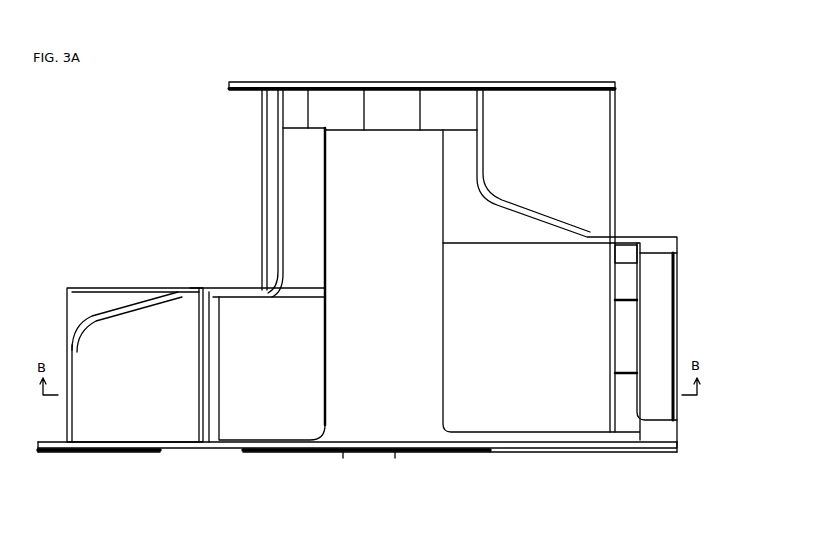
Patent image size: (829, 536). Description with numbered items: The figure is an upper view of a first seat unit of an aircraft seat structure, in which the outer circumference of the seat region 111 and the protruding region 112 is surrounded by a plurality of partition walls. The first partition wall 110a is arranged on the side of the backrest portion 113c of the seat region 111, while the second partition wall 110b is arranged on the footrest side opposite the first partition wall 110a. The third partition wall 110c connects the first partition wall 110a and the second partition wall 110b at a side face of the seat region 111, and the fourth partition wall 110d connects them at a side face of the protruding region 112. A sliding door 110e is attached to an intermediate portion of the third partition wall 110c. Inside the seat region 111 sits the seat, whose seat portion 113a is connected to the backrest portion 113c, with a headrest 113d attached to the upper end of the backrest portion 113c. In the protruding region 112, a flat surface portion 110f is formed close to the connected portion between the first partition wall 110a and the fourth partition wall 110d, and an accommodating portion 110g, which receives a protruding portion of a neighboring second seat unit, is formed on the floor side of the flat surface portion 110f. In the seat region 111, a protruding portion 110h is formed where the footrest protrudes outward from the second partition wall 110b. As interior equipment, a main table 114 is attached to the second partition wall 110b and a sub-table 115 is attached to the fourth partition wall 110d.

The first partition wall 110a is at (612, 163).
The second partition wall 110b is at (262, 165).
The third partition wall 110c is at (630, 447).
The fourth partition wall 110d is at (340, 86).
The sliding door 110e is at (343, 454).
The flat surface portion 110f is at (532, 108).
The accommodating portion 110g is at (637, 124).
The protruding portion 110h is at (150, 335).
The seat region 111 is at (720, 237).
The protruding region 112 is at (720, 82).
The seat portion 113a is at (560, 417).
The backrest portion 113c is at (624, 252).
The headrest 113d is at (627, 338).
The main table 114 is at (303, 353).
The sub-table 115 is at (390, 128).